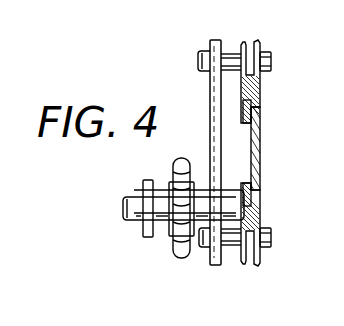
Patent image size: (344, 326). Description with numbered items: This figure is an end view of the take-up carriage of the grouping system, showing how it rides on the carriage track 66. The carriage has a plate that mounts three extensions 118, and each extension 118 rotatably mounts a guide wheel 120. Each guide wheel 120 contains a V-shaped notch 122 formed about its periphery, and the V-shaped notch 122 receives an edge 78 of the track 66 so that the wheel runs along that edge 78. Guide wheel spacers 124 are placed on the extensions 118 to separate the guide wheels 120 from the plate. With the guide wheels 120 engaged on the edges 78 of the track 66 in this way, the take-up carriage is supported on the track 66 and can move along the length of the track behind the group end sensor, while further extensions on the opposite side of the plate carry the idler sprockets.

The carriage track 66 is at (268, 150).
The edge 78 is at (263, 103).
The extension 118 is at (205, 50).
The guide wheel 120 is at (262, 45).
The V-shaped notch 122 is at (250, 38).
The guide wheel spacer 124 is at (232, 72).